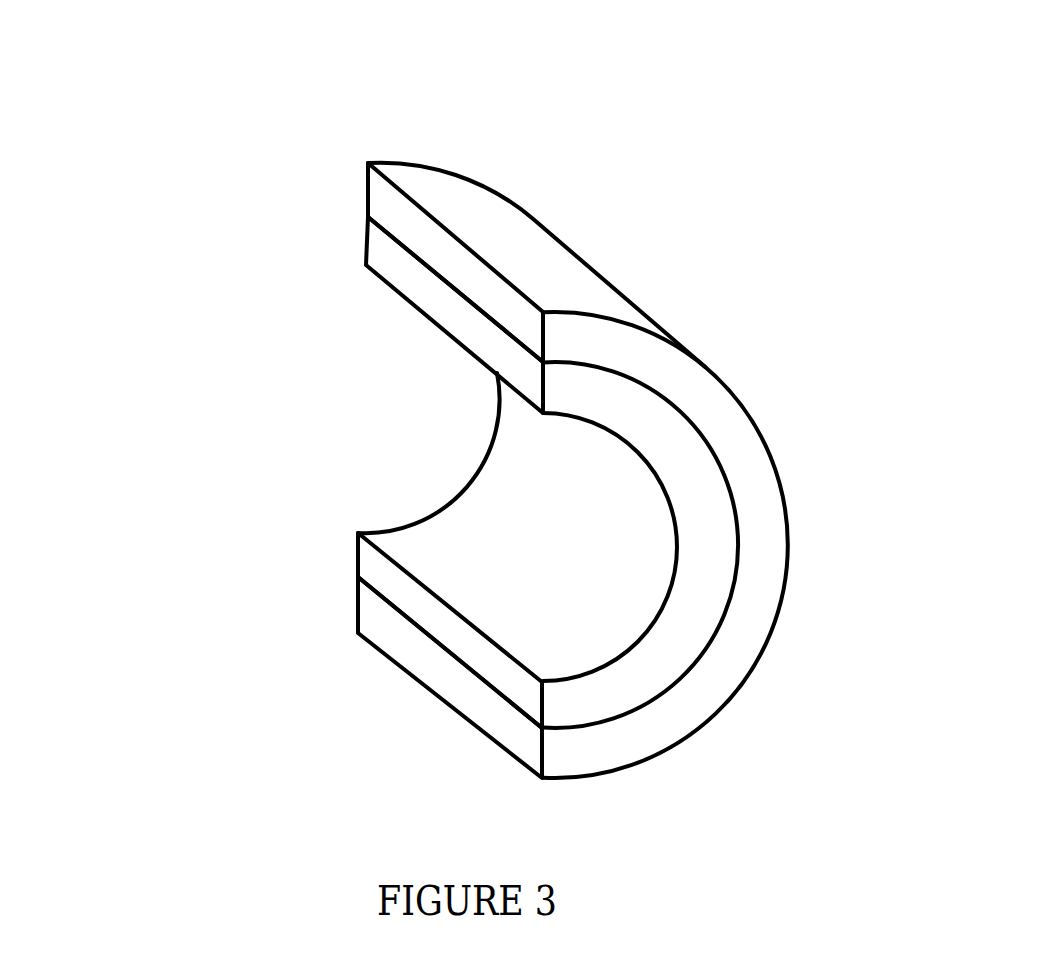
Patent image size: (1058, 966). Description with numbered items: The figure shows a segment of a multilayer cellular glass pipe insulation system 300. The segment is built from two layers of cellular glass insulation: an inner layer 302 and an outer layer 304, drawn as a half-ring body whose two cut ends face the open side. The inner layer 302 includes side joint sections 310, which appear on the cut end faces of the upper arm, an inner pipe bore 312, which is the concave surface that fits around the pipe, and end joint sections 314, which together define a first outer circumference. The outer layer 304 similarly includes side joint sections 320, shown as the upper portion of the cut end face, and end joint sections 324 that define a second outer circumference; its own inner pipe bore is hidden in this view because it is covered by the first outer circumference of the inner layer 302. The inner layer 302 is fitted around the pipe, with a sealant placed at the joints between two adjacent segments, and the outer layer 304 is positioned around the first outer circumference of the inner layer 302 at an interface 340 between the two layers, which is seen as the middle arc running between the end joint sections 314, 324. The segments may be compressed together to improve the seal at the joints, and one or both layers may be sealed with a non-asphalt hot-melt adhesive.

The multilayer cellular glass pipe insulation system 300 is at (110, 100).
The inner layer 302 is at (377, 572).
The outer layer 304 is at (382, 625).
The side joint sections 310 is at (407, 275).
The inner pipe bore 312 is at (487, 542).
The end joint sections 314 is at (710, 557).
The side joint sections 320 is at (407, 228).
The end joint sections 324 is at (717, 420).
The interface 340 is at (677, 683).